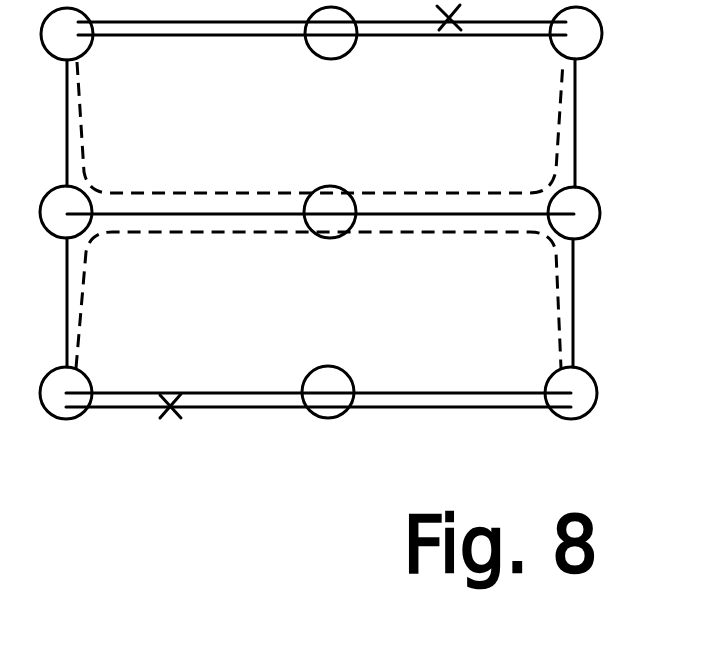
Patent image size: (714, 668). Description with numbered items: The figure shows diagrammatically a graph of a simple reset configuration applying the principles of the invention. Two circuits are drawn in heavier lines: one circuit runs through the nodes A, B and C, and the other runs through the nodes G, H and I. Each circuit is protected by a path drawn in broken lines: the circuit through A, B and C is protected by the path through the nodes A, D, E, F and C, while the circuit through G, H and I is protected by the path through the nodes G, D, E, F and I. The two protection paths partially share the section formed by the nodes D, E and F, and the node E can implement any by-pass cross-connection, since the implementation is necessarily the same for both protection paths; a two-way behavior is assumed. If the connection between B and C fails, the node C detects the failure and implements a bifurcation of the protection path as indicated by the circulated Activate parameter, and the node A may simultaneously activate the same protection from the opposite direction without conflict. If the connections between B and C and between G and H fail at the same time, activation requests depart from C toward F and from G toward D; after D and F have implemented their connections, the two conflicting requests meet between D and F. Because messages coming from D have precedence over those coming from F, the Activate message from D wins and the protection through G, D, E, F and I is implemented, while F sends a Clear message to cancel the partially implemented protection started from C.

The node A is at (67, 34).
The node B is at (331, 33).
The node C is at (576, 33).
The node D is at (66, 212).
The node E is at (330, 212).
The node F is at (574, 213).
The node G is at (66, 393).
The node H is at (328, 392).
The node I is at (571, 393).